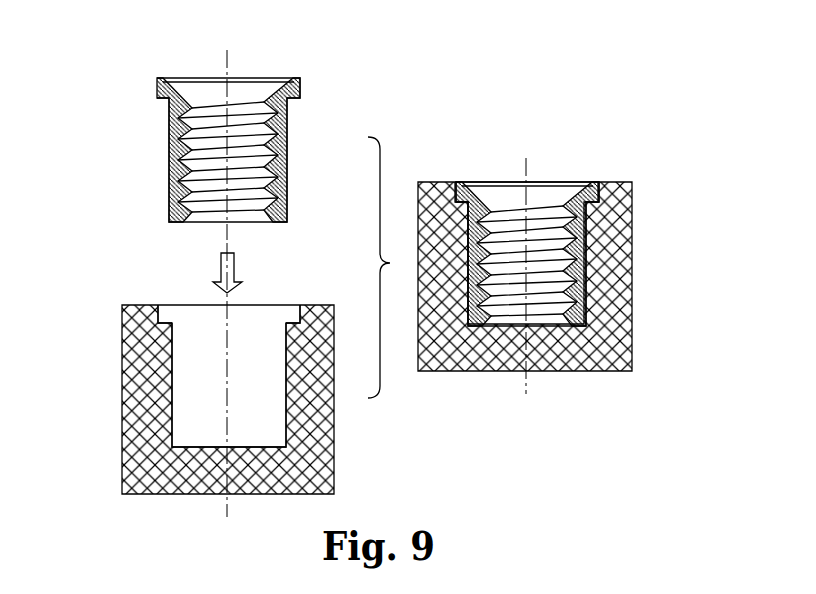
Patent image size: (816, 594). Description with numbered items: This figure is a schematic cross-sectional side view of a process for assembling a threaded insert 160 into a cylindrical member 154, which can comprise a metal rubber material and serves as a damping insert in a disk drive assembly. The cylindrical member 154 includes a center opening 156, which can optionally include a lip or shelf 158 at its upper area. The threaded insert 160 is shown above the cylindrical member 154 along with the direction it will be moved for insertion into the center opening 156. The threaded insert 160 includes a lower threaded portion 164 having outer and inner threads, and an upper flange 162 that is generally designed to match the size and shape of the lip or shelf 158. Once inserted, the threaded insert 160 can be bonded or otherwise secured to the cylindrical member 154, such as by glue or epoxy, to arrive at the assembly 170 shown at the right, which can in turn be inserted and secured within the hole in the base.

The cylindrical member 154 is at (102, 298).
The center opening 156 is at (245, 322).
The lip or shelf 158 is at (294, 320).
The threaded insert 160 is at (312, 67).
The upper flange 162 is at (157, 88).
The lower threaded portion 164 is at (302, 98).
The assembly 170 is at (660, 160).